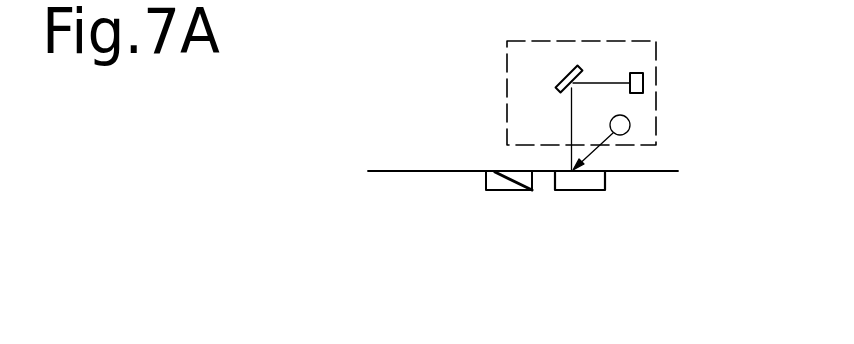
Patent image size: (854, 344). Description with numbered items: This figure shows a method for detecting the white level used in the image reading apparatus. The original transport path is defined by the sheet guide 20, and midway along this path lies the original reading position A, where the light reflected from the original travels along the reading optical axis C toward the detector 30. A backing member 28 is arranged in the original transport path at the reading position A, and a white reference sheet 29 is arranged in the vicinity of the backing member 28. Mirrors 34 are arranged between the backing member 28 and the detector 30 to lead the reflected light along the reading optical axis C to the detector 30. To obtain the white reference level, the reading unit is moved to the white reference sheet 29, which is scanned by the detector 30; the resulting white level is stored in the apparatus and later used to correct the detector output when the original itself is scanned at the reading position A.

The sheet guide 20 is at (420, 170).
The backing member 28 is at (485, 182).
The white reference sheet 29 is at (583, 185).
The detector 30 is at (643, 82).
The mirror 34 is at (558, 75).
The reading optical axis C is at (571, 118).
The original reading position A is at (503, 183).